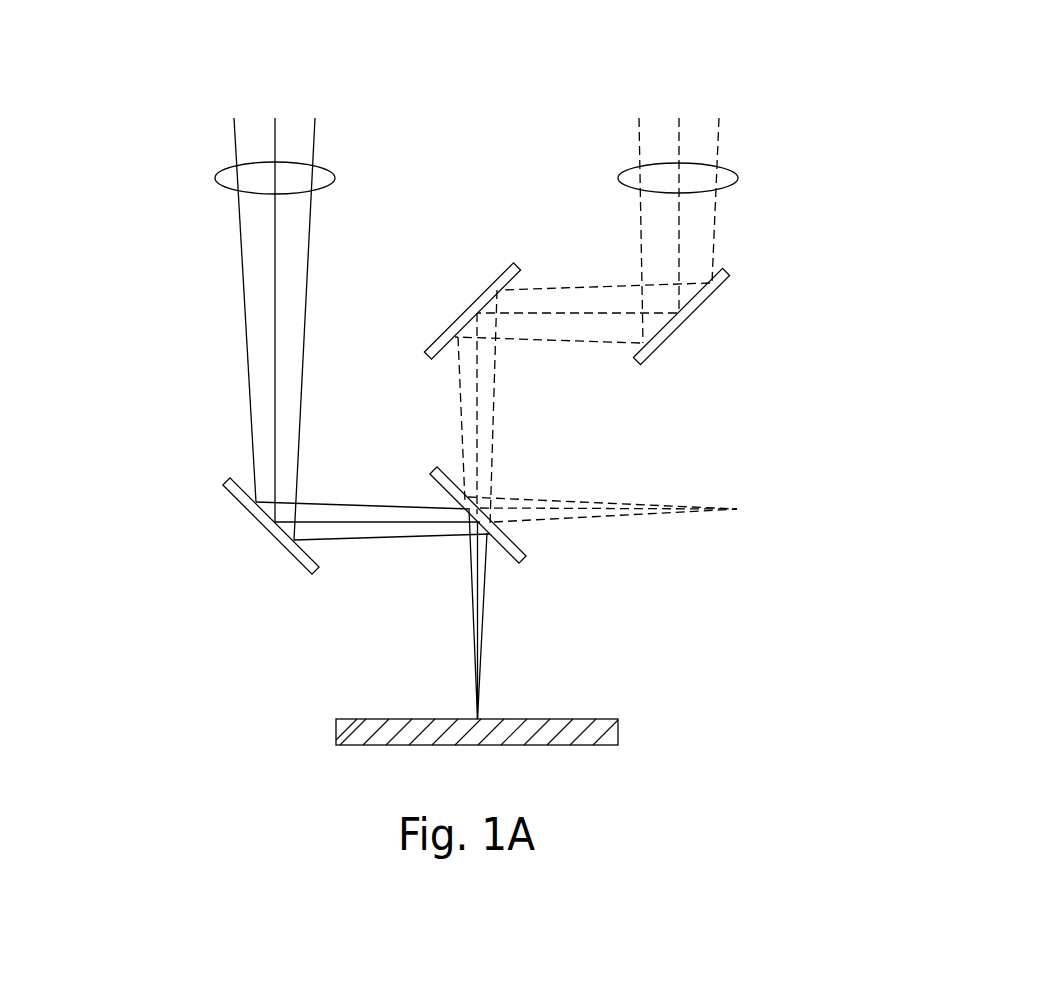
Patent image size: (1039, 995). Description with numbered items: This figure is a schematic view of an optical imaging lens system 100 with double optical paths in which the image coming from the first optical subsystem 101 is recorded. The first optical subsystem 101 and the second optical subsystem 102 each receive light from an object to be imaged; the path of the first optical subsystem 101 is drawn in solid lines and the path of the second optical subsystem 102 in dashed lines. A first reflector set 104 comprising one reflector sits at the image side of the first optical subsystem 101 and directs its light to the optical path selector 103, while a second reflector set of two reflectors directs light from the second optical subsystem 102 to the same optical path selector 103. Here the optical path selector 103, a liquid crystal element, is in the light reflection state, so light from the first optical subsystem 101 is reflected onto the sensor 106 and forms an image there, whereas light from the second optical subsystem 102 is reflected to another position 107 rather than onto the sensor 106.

The optical imaging lens system with double optical paths 100 is at (905, 146).
The first optical subsystem 101 is at (335, 173).
The second optical subsystem 102 is at (740, 172).
The optical path selector 103 is at (521, 559).
The first reflector set 104 is at (268, 532).
The sensor 106 is at (618, 732).
The another position 107 is at (737, 509).